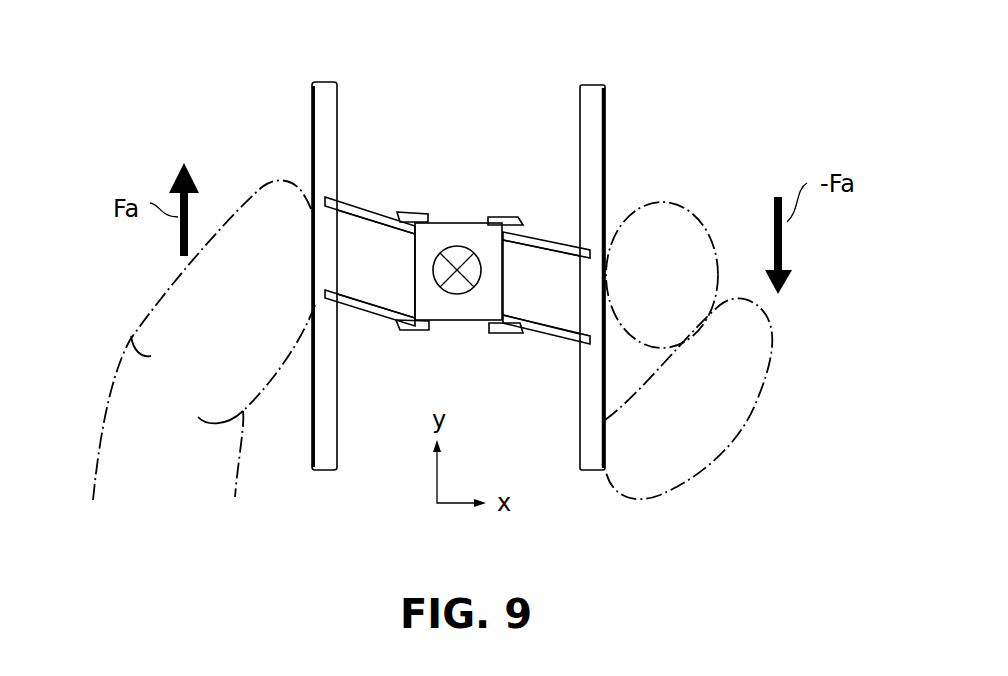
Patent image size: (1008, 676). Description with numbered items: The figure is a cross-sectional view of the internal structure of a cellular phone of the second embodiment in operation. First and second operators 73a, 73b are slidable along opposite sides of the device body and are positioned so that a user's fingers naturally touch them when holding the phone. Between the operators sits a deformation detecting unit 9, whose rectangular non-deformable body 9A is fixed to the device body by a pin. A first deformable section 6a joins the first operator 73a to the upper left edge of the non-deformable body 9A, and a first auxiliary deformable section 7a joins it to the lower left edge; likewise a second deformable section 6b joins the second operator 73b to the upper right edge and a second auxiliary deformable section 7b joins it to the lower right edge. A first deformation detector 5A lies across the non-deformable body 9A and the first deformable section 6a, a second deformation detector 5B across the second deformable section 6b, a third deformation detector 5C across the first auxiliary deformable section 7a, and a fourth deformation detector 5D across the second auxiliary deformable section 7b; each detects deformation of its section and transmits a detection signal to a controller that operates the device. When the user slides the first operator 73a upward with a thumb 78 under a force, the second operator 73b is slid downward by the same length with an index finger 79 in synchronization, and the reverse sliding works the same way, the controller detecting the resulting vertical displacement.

The first operator 73a is at (318, 102).
The second operator 73b is at (595, 108).
The first deformable section 6a is at (353, 200).
The second deformable section 6b is at (553, 238).
The first auxiliary deformable section 7a is at (365, 302).
The second auxiliary deformable section 7b is at (545, 325).
The deformation detecting unit 9 is at (457, 346).
The non-deformable body 9A is at (440, 235).
The first deformation detector 5A is at (403, 211).
The second deformation detector 5B is at (497, 215).
The third deformation detector 5C is at (407, 331).
The fourth deformation detector 5D is at (498, 333).
The thumb 78 is at (127, 324).
The index finger 79 is at (672, 222).